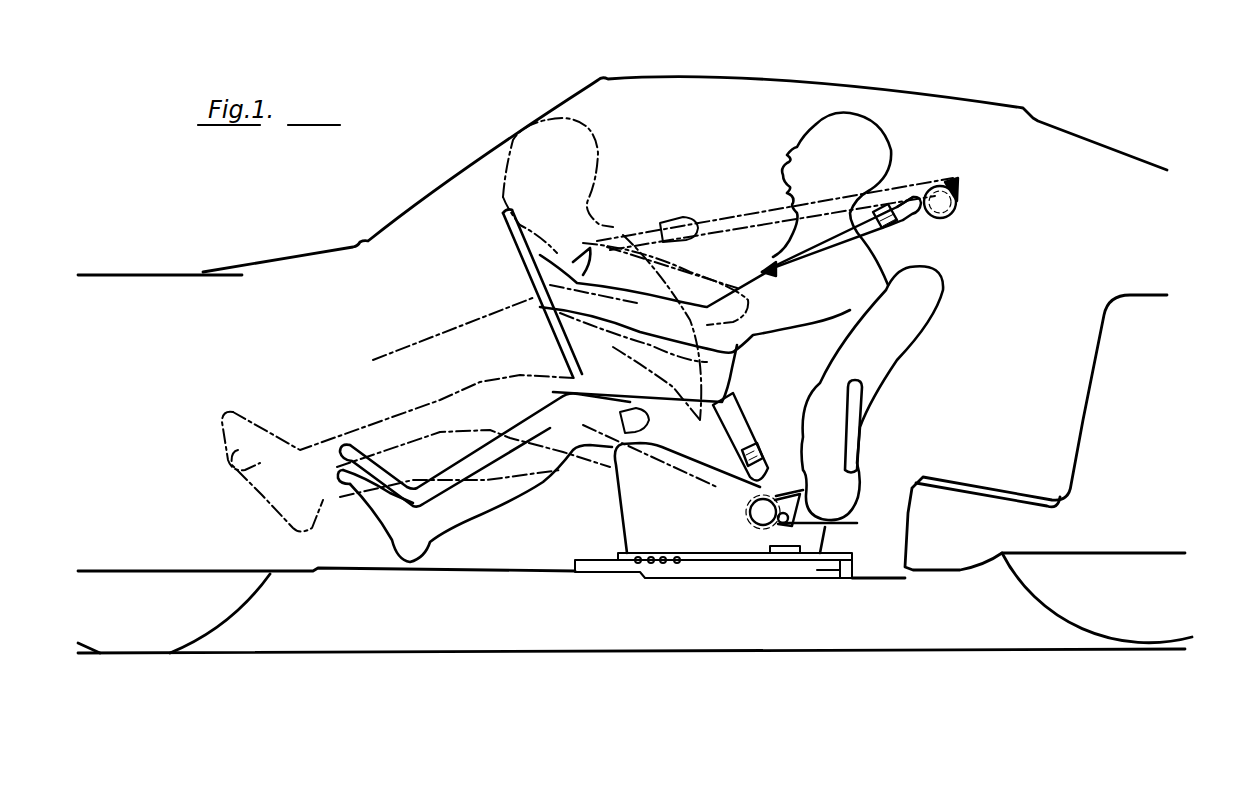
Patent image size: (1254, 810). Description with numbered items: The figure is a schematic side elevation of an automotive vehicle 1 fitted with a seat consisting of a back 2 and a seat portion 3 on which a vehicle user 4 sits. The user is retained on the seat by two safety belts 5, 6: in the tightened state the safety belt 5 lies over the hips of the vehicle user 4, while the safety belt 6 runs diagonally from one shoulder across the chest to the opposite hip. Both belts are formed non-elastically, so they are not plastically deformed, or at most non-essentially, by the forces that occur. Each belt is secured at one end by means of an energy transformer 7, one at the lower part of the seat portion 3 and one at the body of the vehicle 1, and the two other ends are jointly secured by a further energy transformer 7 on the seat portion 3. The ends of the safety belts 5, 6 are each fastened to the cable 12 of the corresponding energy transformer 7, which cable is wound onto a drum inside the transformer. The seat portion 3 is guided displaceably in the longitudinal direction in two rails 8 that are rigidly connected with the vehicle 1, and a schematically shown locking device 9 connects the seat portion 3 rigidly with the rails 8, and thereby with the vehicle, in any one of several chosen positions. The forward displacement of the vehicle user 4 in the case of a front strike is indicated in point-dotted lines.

The automotive vehicle 1 is at (940, 92).
The back 2 is at (903, 310).
The seat portion 3 is at (643, 513).
The vehicle user 4 is at (598, 149).
The safety belt 5 is at (740, 437).
The safety belt 6 is at (860, 228).
The energy transformer 7 is at (957, 201).
The rails 8 is at (782, 553).
The locking device 9 is at (660, 558).
The cable 12 is at (767, 215).